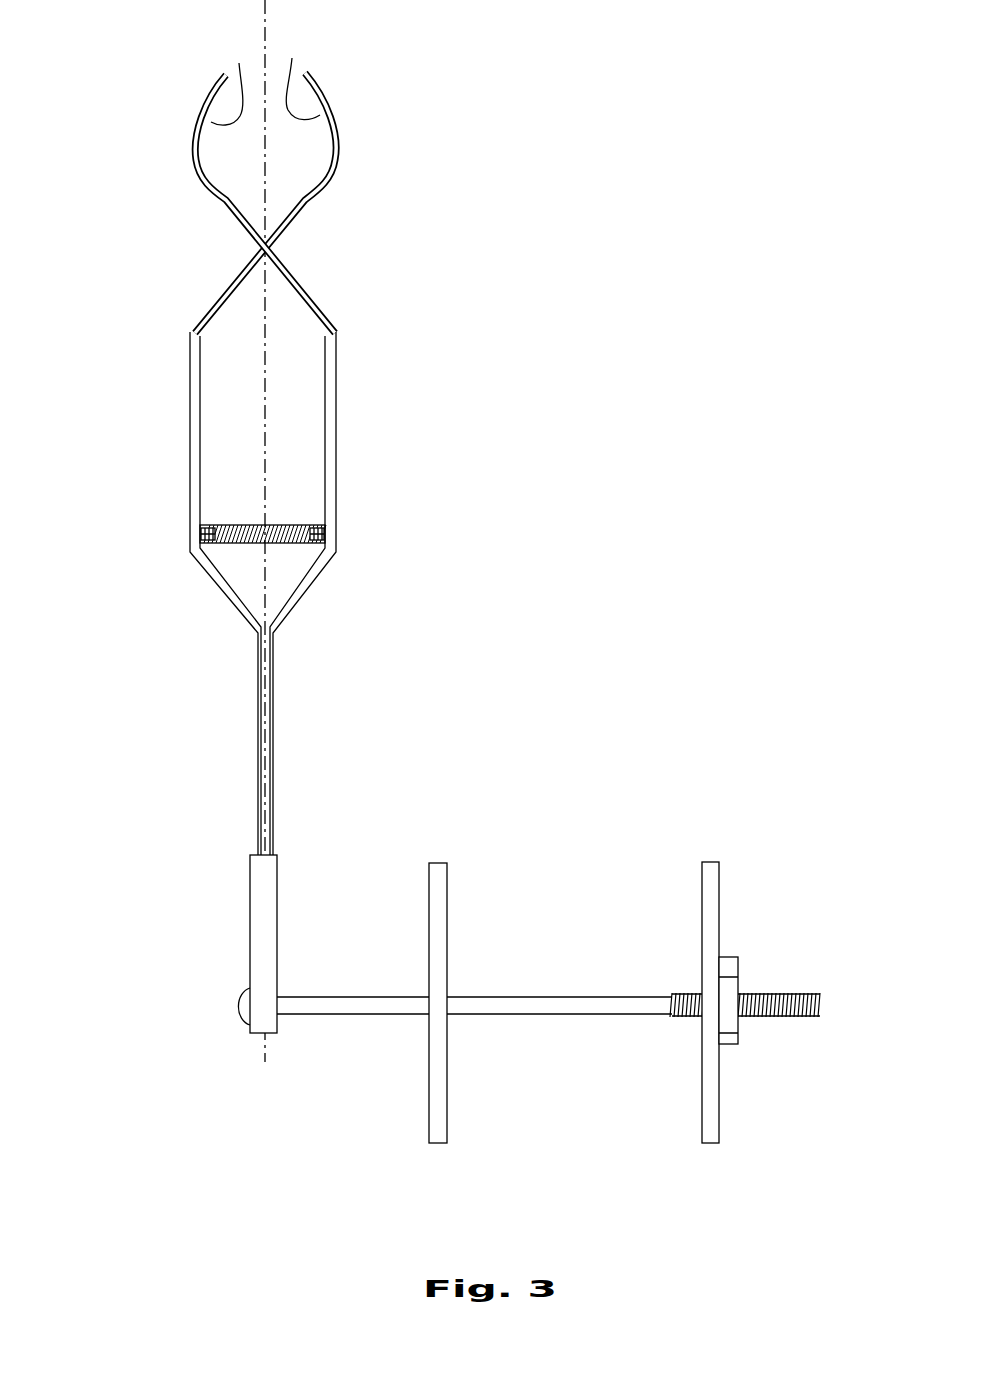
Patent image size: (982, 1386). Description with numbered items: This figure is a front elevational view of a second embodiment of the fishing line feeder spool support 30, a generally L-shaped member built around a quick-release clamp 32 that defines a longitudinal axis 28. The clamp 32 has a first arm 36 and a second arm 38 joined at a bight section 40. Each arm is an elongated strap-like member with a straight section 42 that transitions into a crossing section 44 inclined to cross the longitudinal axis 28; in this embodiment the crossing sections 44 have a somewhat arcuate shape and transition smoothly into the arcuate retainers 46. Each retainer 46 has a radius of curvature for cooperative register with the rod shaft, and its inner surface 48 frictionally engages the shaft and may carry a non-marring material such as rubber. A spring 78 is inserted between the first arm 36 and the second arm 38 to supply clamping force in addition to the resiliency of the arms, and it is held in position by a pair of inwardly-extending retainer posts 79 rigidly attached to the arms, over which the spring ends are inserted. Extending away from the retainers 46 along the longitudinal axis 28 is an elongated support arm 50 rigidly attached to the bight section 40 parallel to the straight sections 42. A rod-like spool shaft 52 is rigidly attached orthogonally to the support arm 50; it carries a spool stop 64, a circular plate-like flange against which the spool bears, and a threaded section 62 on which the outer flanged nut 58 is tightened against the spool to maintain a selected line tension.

The longitudinal axis 28 is at (265, 20).
The fishing line feeder spool support 30 is at (504, 753).
The quick-release clamp 32 is at (364, 572).
The first arm 36 is at (337, 487).
The second arm 38 is at (188, 507).
The bight section 40 is at (228, 602).
The straight section 42 is at (190, 413).
The crossing section 44 is at (220, 297).
The arcuate retainer 46 is at (195, 162).
The inner surface 48 is at (265, 79).
The support arm 50 is at (273, 855).
The spool shaft 52 is at (323, 997).
The outer flanged nut 58 is at (710, 868).
The threaded section 62 is at (781, 995).
The spool stop 64 is at (442, 897).
The spring 78 is at (282, 543).
The retainer posts 79 is at (318, 534).